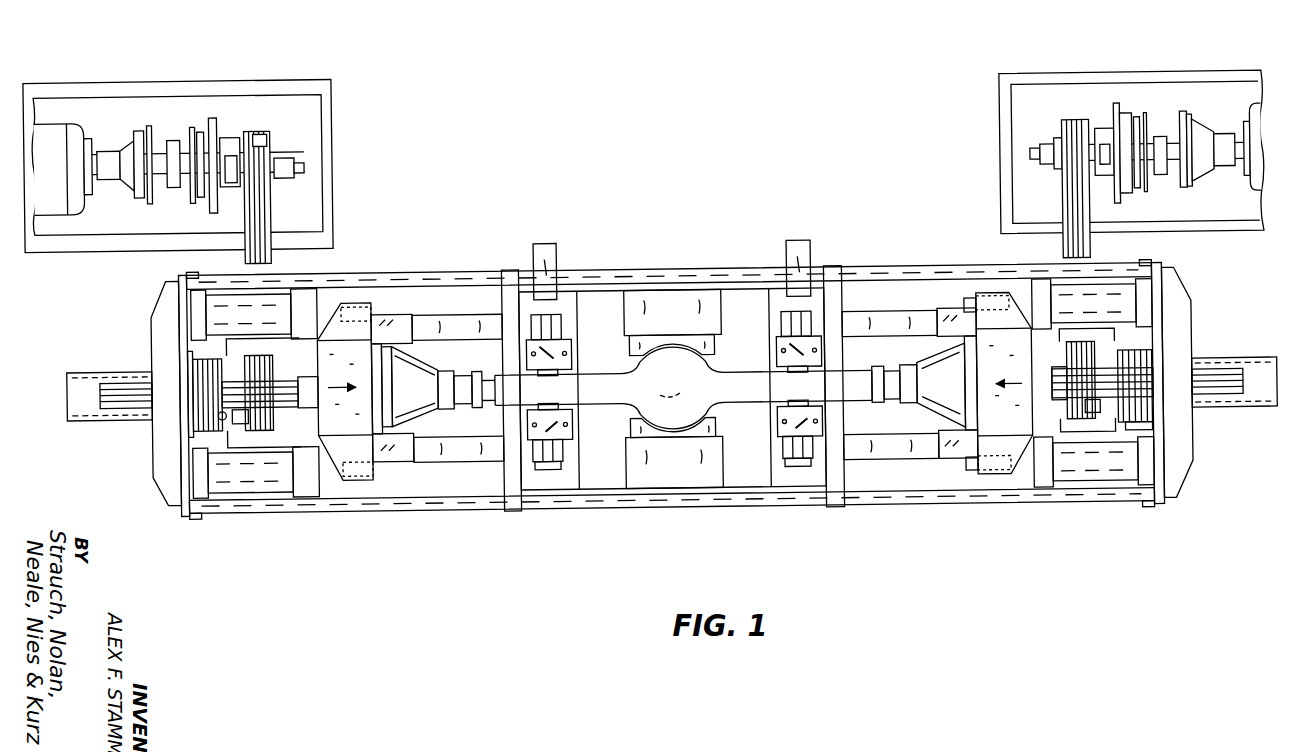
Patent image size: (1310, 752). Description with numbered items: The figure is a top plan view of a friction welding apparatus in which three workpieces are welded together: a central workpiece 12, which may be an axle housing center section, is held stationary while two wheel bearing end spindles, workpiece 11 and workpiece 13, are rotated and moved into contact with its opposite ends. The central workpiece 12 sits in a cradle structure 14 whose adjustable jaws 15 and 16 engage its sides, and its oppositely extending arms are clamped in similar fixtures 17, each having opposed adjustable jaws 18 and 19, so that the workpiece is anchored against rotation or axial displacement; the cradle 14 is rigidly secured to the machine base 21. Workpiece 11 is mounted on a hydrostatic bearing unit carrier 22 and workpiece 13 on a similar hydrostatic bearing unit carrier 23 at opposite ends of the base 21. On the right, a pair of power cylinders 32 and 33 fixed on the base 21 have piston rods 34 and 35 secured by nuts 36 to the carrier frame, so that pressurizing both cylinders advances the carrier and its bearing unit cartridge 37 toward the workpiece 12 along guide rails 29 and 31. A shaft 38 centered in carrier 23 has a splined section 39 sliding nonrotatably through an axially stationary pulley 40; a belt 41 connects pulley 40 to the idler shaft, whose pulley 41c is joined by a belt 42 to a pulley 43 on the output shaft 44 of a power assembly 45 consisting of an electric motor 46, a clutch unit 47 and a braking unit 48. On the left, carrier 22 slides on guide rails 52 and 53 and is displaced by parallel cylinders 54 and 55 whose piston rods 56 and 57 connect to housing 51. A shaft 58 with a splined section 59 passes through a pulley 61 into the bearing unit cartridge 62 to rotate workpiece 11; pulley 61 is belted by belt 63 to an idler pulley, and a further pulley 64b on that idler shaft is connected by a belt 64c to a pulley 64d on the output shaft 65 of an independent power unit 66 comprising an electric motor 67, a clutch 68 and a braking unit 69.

The workpiece 11 is at (462, 376).
The central workpiece 12 is at (664, 391).
The workpiece 13 is at (888, 374).
The cradle structure 14 is at (636, 298).
The adjustable jaw 15 is at (700, 344).
The adjustable jaw 16 is at (704, 430).
The fixture 17 is at (548, 468).
The adjustable jaw 18 is at (555, 360).
The adjustable jaw 19 is at (556, 410).
The machine base 21 is at (766, 502).
The hydrostatic bearing unit carrier 22 is at (362, 330).
The hydrostatic bearing unit carrier 23 is at (990, 330).
The guide rail 29 is at (916, 322).
The guide rail 31 is at (902, 452).
The power cylinder 32 is at (1122, 302).
The power cylinder 33 is at (1100, 474).
The piston rod 34 is at (1040, 300).
The piston rod 35 is at (1045, 472).
The nut 36 is at (966, 305).
The bearing unit cartridge 37 is at (940, 392).
The shaft 38 is at (1060, 402).
The splined section 39 is at (1092, 352).
The pulley 40 is at (1130, 362).
The belt 41 is at (1140, 424).
The pulley 41c is at (1097, 416).
The belt 42 is at (1092, 374).
The pulley 43 is at (1085, 128).
The output shaft 44 is at (1038, 152).
The power assembly 45 is at (1207, 148).
The electric motor 46 is at (1262, 162).
The clutch unit 47 is at (1188, 182).
The braking unit 48 is at (1122, 128).
The housing 51 is at (358, 458).
The guide rail 52 is at (484, 326).
The guide rail 53 is at (446, 450).
The cylinder 54 is at (272, 300).
The cylinder 55 is at (256, 478).
The piston rod 56 is at (321, 311).
The piston rod 57 is at (324, 472).
The shaft 58 is at (284, 377).
The splined section 59 is at (238, 410).
The pulley 61 is at (200, 418).
The bearing unit cartridge 62 is at (412, 380).
The belt 63 is at (187, 352).
The pulley 64b is at (270, 420).
The belt 64c is at (250, 252).
The pulley 64d is at (266, 128).
The output shaft 65 is at (292, 156).
The power unit 66 is at (237, 117).
The electric motor 67 is at (55, 128).
The clutch 68 is at (148, 140).
The braking unit 69 is at (206, 130).